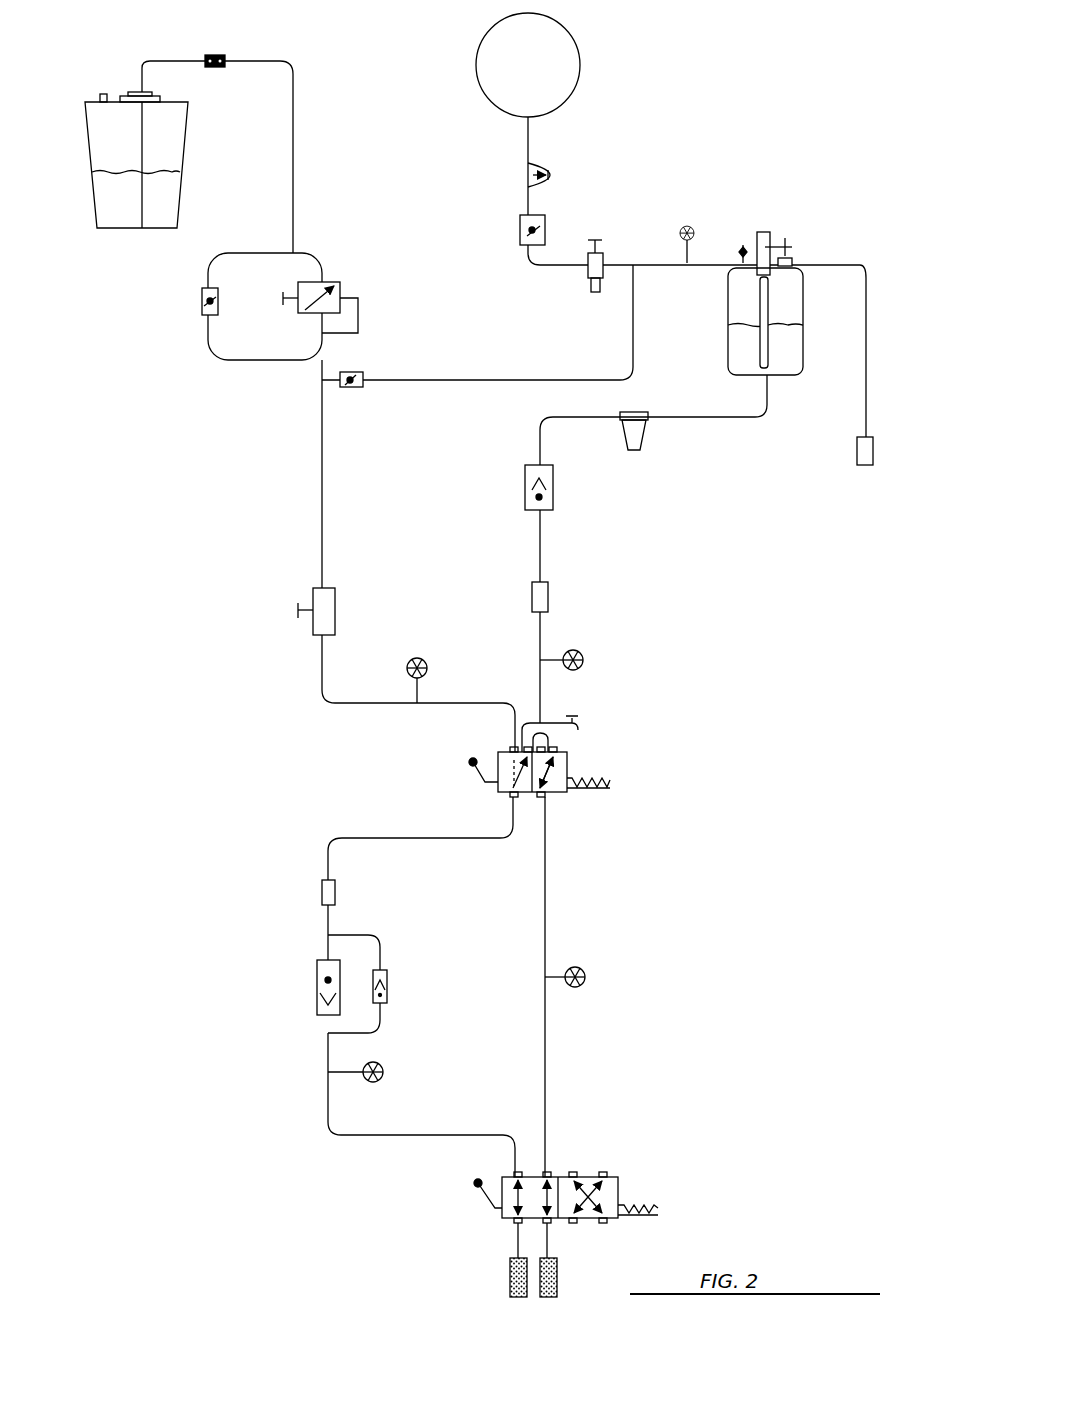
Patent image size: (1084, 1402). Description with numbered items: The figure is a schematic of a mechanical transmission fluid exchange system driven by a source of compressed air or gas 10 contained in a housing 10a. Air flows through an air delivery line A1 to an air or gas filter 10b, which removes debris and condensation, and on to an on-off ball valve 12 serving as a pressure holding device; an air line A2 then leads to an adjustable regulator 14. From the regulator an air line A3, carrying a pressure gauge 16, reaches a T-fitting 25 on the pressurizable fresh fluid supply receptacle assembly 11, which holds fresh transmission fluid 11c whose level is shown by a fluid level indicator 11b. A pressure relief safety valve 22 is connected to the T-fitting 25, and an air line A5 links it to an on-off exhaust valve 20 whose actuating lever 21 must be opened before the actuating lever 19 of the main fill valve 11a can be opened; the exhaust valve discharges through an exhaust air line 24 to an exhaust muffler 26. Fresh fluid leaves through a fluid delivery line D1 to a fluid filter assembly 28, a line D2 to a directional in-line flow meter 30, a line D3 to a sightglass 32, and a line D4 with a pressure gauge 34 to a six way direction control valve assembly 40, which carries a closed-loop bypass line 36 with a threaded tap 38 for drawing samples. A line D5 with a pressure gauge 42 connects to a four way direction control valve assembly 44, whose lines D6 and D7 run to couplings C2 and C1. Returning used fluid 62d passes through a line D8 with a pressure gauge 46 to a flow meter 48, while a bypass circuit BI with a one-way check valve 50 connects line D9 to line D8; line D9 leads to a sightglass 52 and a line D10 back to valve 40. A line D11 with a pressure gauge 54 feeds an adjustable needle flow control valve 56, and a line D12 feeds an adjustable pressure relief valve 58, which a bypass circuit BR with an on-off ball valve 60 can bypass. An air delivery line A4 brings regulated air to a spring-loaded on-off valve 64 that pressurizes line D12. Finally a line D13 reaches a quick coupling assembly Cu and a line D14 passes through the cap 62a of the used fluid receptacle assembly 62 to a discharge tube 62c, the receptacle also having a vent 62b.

The source of compressed air or gas 10 is at (528, 65).
The housing 10a is at (565, 98).
The air or gas filter 10b is at (545, 165).
The on-off ball valve 12 is at (520, 232).
The compressed air or gas regulator 14 is at (590, 280).
The pressure gauge 16 is at (687, 226).
The pressure relief safety valve 22 is at (743, 246).
The actuating lever 21 is at (787, 240).
The on-off actuating lever 19 is at (792, 244).
The on-off exhaust valve 20 is at (793, 259).
The T-fitting 25 is at (742, 259).
The pressurizable fresh fluid supply receptacle assembly 11 is at (726, 362).
The main fill valve 11a is at (768, 234).
The fluid level indicator 11b is at (770, 340).
The fresh transmission fluid 11c is at (728, 343).
The exhaust air line 24 is at (866, 395).
The exhaust muffler 26 is at (873, 445).
The fluid filter assembly 28 is at (633, 451).
The directional in-line flow meter 30 is at (553, 500).
The sightglass 32 is at (548, 597).
The pressure gauge 34 is at (578, 651).
The closed-loop bypass line 36 is at (552, 722).
The threaded tap 38 is at (580, 717).
The six way direction control valve assembly 40 is at (574, 760).
The pressure gauge 42 is at (578, 966).
The four way direction control valve assembly 44 is at (614, 1176).
The pressure gauge 46 is at (378, 1062).
The directional in-line flow meter 48 is at (317, 977).
The one-way check valve 50 is at (387, 977).
The sightglass 52 is at (335, 886).
The pressure gauge 54 is at (420, 656).
The adjustable needle flow control valve 56 is at (335, 600).
The adjustable pressure relief valve 58 is at (330, 282).
The on-off ball valve 60 is at (208, 290).
The used fluid receptacle assembly 62 is at (140, 234).
The cap 62a is at (160, 96).
The vent 62b is at (103, 94).
The discharge tube 62c is at (143, 150).
The used fluid 62d is at (182, 193).
The on-off valve 64 is at (363, 385).
The air delivery line A1 is at (528, 145).
The air line A2 is at (535, 268).
The air line A3 is at (697, 263).
The air delivery line A4 is at (530, 376).
The air line A5 is at (757, 268).
The fluid delivery line D1 is at (705, 418).
The fluid delivery line D2 is at (540, 437).
The fluid delivery line D3 is at (540, 550).
The fluid delivery line D4 is at (540, 632).
The fluid delivery line D5 is at (545, 900).
The fluid delivery line D6 is at (547, 1245).
The fluid delivery line D7 is at (518, 1245).
The fluid delivery line D8 is at (462, 1135).
The fluid delivery line D9 is at (328, 922).
The fluid delivery line D10 is at (445, 838).
The fluid delivery line D11 is at (380, 705).
The fluid delivery line D12 is at (322, 503).
The fluid delivery line D13 is at (293, 125).
The fluid delivery line D14 is at (180, 60).
The coupling C1 is at (510, 1268).
The coupling C2 is at (557, 1268).
The bypass circuit BR is at (203, 342).
The bypass circuit BI is at (386, 936).
The quick coupling assembly Cu is at (218, 54).